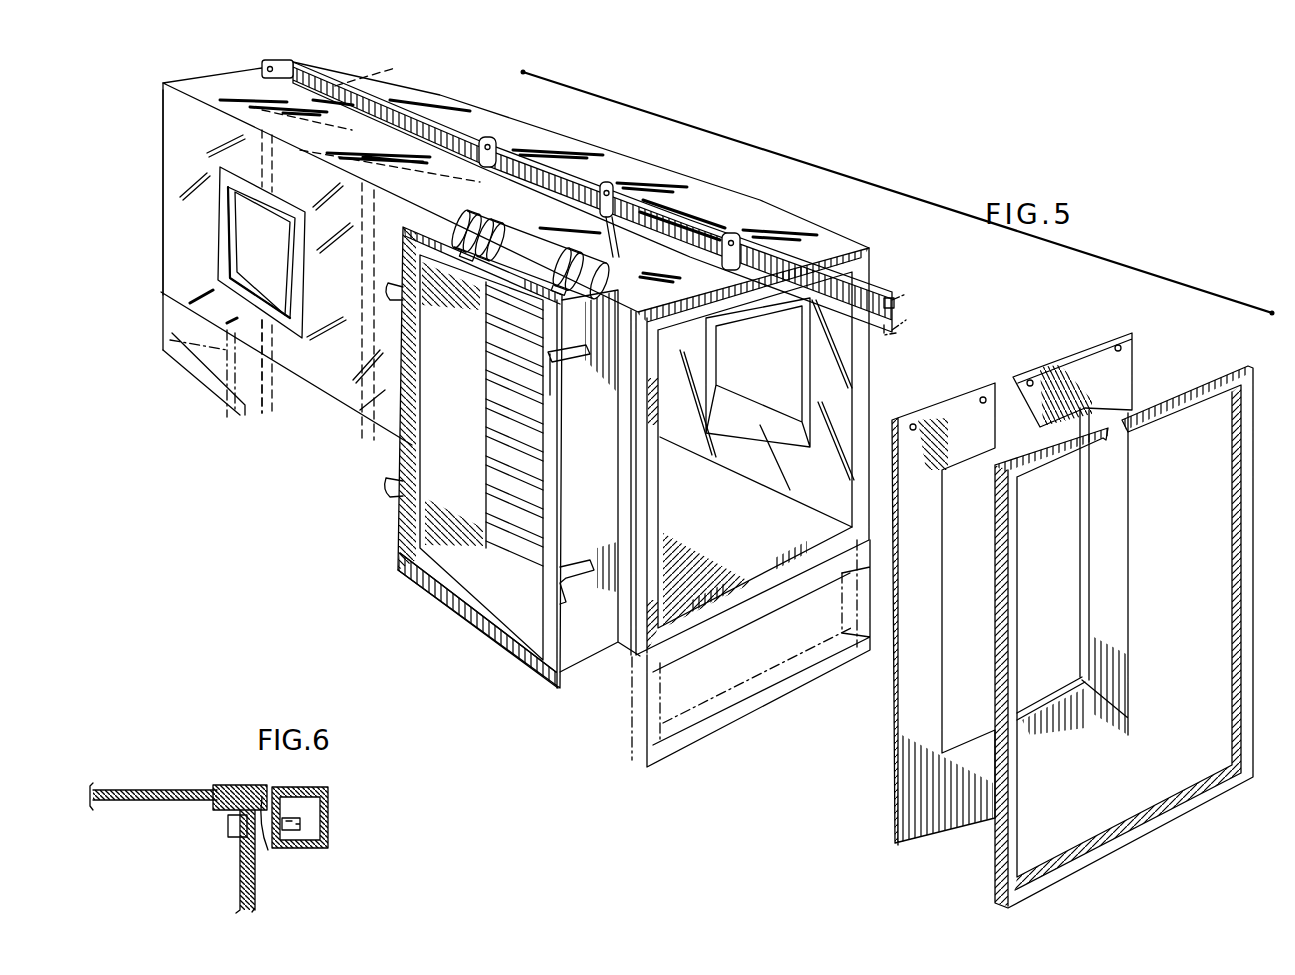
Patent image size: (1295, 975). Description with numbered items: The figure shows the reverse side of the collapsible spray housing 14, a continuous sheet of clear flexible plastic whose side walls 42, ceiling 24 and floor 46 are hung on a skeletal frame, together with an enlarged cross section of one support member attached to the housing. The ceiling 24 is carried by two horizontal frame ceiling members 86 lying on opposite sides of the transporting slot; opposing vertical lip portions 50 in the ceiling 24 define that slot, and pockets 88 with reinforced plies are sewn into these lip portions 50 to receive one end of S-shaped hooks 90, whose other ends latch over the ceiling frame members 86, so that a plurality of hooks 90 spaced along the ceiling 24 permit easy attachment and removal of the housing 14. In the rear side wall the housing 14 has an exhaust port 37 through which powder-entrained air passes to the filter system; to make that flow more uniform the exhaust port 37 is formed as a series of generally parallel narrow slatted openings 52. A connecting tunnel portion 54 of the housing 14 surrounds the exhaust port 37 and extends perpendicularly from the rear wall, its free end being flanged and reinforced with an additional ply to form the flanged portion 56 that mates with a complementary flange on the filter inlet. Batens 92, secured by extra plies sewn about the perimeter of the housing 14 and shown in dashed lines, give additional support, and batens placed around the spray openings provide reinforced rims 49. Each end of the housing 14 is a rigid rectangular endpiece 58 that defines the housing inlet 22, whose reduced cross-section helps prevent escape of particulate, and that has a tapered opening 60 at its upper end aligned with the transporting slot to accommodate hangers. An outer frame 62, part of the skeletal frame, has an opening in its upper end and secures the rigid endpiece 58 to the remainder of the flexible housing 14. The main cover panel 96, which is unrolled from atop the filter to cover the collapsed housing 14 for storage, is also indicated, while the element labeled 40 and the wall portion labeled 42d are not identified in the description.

The ceiling 24 is at (240, 92).
The vertical lip portions 50 is at (445, 128).
The S-shaped hooks 90 is at (490, 140).
The main cover panel 96 is at (538, 246).
The pockets 88 is at (613, 225).
The skeletal frame ceiling members 86 is at (906, 297).
The spray housing 14 is at (162, 272).
The side wall 42 is at (220, 208).
The reinforced rims 49 is at (302, 277).
The batens 92 is at (357, 360).
The base frame 40 is at (200, 385).
The opening edge 42d is at (356, 425).
The flanged portion 56 is at (400, 440).
The slatted openings 52 is at (530, 503).
The exhaust port 37 is at (522, 498).
The floor 46 is at (728, 557).
The connecting tunnel portion 54 is at (598, 658).
The endpiece 58 is at (897, 735).
The tapered opening 60 is at (1032, 442).
The spray housing inlet 22 is at (1057, 589).
The outer frame 62 is at (1165, 815).